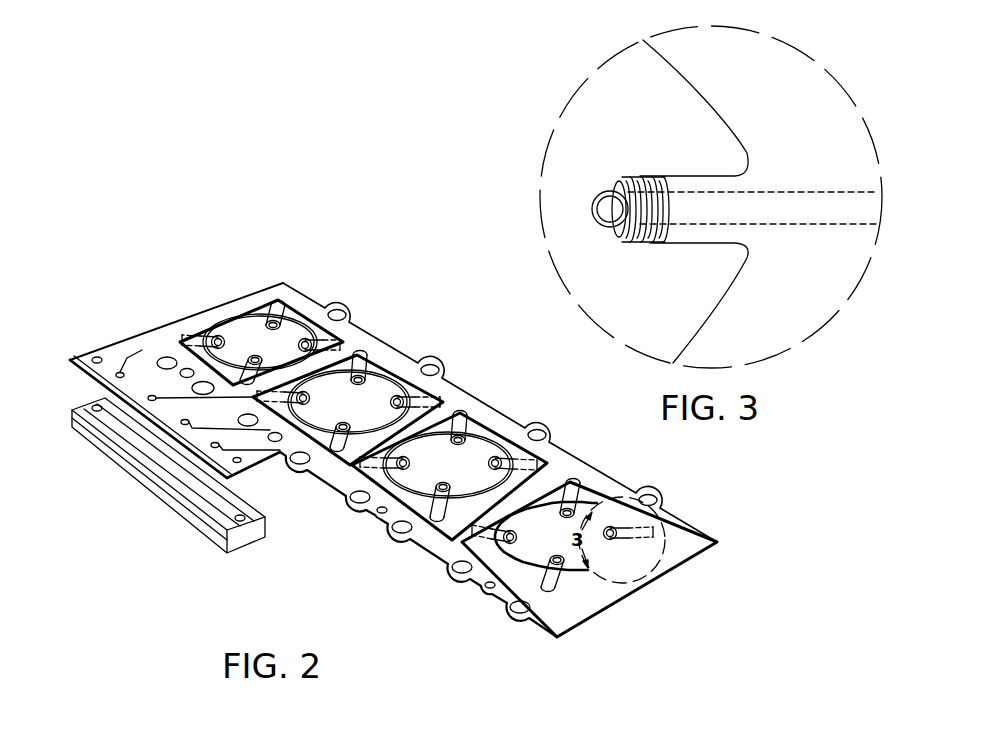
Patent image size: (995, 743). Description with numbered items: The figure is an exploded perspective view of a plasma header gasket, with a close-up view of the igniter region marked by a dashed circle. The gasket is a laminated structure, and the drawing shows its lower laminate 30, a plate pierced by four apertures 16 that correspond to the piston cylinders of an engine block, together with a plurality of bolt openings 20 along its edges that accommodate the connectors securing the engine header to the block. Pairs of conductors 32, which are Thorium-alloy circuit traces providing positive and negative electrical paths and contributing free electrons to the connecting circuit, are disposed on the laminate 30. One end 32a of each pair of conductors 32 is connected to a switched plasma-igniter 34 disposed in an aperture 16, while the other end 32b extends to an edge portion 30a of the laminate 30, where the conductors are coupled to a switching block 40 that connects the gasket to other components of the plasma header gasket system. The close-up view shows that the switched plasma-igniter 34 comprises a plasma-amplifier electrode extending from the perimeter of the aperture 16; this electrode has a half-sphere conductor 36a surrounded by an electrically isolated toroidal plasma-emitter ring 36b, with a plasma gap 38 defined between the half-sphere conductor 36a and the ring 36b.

In FIG. 2, the aperture 16 is at (602, 562).
In FIG. 2, the bolt opening 20 is at (461, 573).
In FIG. 2, the lower laminate 30 is at (468, 392).
In FIG. 2, the edge portion of the laminate 30a is at (72, 357).
In FIG. 2, the pair of conductors 32 is at (143, 350).
In FIG. 2, the one end of the conductors 32a is at (363, 370).
In FIG. 2, the other end of the conductors 32b is at (152, 401).
In FIG. 2, the switched plasma-igniter 34 is at (358, 378).
In FIG. 3, the half-sphere conductor 36a is at (608, 190).
In FIG. 3, the toroidal plasma-emitter ring 36b is at (606, 207).
In FIG. 3, the plasma gap 38 is at (606, 237).
In FIG. 2, the switching block 40 is at (168, 505).